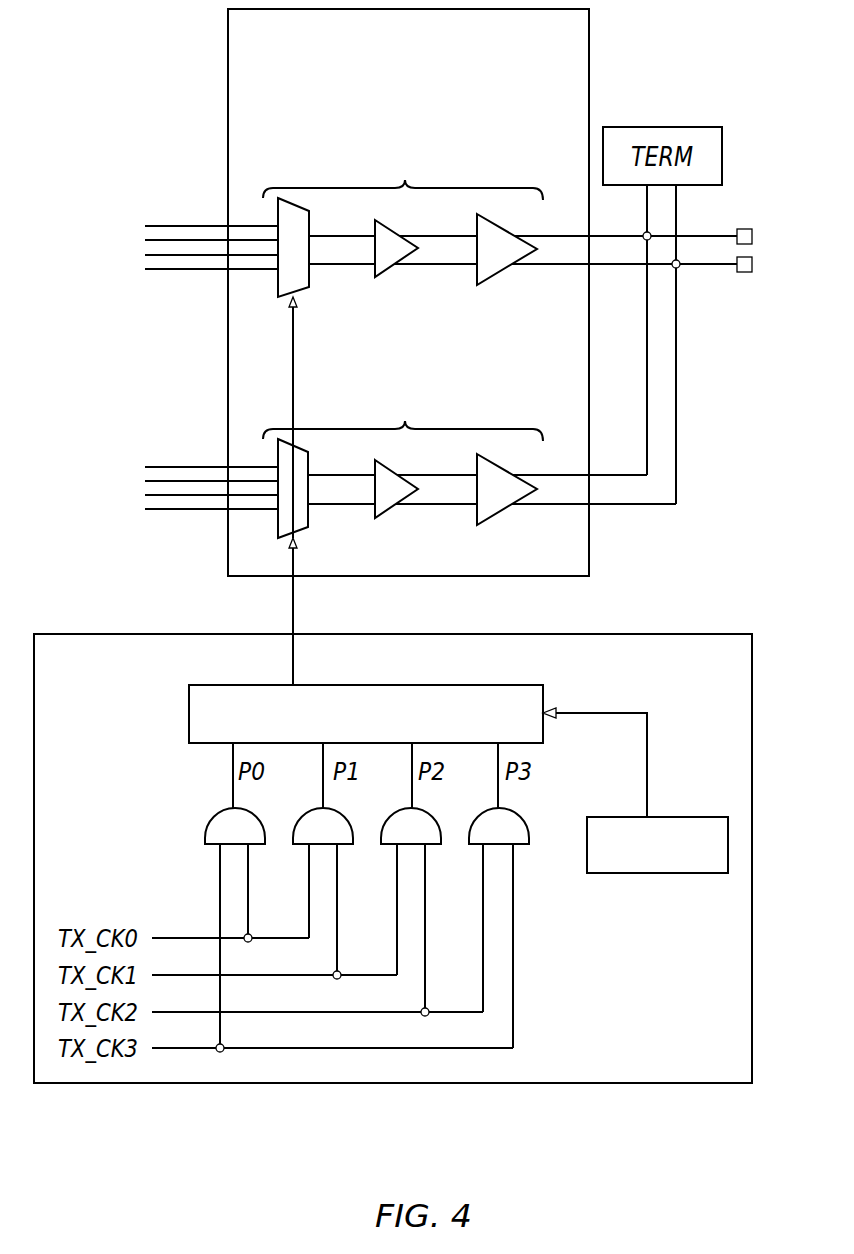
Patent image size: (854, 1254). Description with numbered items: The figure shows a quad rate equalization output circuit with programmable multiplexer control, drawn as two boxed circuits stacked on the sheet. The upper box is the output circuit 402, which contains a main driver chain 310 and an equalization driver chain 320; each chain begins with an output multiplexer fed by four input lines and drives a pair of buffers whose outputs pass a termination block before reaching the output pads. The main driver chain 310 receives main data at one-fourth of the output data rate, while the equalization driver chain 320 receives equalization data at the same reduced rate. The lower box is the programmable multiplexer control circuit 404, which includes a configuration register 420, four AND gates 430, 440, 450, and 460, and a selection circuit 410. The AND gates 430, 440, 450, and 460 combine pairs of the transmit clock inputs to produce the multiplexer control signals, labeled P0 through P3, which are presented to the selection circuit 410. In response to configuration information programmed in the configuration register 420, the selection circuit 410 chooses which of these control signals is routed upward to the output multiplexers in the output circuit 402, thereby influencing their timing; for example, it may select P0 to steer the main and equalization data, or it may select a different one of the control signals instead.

The main driver chain 310 is at (405, 173).
The equalization driver chain 320 is at (405, 414).
The output circuit 402 is at (589, 566).
The programmable multiplexer control circuit 404 is at (710, 633).
The selection circuit 410 is at (189, 712).
The configuration register 420 is at (670, 874).
The AND gate 430 is at (207, 832).
The AND gate 440 is at (295, 832).
The AND gate 450 is at (383, 832).
The AND gate 460 is at (471, 832).